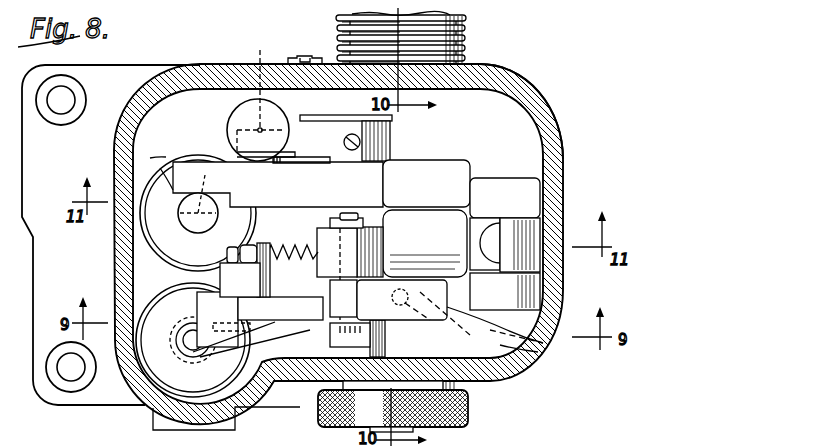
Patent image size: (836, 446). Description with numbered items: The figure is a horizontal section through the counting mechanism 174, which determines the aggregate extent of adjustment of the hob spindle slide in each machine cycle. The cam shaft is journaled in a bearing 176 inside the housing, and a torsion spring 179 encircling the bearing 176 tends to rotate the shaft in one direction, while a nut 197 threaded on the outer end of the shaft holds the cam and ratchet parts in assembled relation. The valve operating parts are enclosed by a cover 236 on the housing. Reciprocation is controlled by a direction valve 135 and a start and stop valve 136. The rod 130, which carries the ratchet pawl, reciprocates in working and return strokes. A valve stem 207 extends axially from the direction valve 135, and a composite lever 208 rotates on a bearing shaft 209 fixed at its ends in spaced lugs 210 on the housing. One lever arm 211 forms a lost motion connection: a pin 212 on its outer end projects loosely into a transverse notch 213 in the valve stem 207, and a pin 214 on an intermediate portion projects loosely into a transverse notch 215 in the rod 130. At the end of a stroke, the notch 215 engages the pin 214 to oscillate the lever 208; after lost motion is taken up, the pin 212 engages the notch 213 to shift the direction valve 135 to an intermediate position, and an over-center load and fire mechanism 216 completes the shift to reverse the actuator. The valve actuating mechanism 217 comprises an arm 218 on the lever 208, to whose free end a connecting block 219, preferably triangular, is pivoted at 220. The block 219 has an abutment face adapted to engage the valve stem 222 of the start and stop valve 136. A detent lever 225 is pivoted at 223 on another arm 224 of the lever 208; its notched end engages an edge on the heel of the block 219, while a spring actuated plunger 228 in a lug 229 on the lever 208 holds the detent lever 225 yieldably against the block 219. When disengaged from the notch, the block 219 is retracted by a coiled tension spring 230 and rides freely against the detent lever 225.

The rod 130 is at (240, 112).
The direction valve 135 is at (160, 163).
The start and stop valve 136 is at (158, 316).
The counting mechanism 174 is at (528, 78).
The bearing 176 is at (455, 20).
The torsion spring 179 is at (342, 23).
The nut 197 is at (468, 408).
The valve stem 207 is at (213, 234).
The composite lever 208 is at (372, 191).
The bearing shaft 209 is at (350, 114).
The lugs 210 is at (390, 146).
The lever arm 211 is at (150, 158).
The pin 212 is at (173, 176).
The transverse notch 213 is at (200, 195).
The pin 214 is at (237, 155).
The transverse notch 215 is at (260, 50).
The over-center load and fire mechanism 216 is at (486, 214).
The valve actuating mechanism 217 is at (184, 308).
The arm 218 is at (298, 321).
The connecting block 219 is at (197, 296).
The pivot 220 is at (262, 348).
The valve stem 222 is at (188, 341).
The pivot 223 is at (367, 250).
The arm 224 is at (386, 240).
The detent lever 225 is at (548, 355).
The spring actuated plunger 228 is at (438, 332).
The lug 229 is at (528, 362).
The coiled tension spring 230 is at (300, 242).
The cover 236 is at (548, 118).